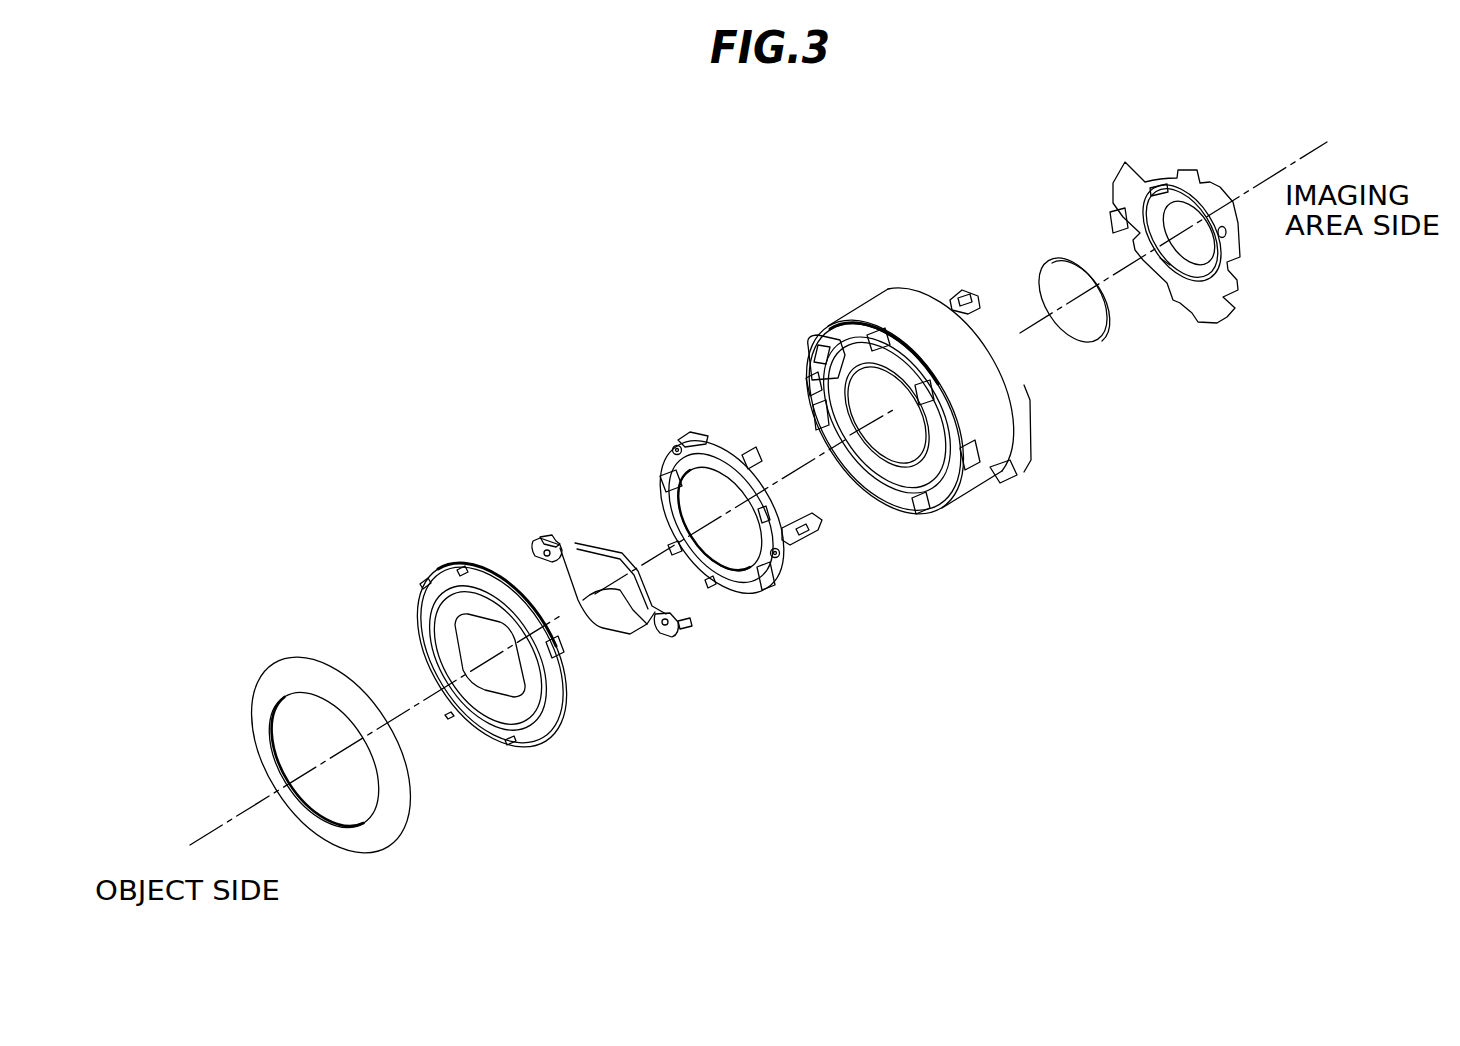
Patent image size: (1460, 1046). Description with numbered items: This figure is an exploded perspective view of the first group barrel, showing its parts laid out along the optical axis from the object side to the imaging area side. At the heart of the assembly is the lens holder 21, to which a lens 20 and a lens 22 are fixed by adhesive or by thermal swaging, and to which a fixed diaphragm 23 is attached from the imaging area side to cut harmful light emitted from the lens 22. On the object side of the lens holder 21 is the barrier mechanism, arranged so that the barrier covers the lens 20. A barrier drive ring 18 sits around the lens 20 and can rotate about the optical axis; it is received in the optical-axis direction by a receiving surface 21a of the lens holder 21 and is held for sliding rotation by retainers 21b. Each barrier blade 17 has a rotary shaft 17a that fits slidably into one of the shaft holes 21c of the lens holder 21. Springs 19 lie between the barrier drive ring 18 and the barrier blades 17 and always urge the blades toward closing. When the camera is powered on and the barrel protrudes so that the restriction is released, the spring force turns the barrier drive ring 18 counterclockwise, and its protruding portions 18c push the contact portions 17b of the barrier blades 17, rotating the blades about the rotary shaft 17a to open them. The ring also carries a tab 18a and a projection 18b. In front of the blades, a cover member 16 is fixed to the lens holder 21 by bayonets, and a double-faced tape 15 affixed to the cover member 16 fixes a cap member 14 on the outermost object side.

The cap member 14 is at (340, 835).
The double-faced tape 15 is at (473, 723).
The cover member 16 is at (510, 717).
The barrier blades 17 is at (598, 591).
The rotary shaft 17a is at (556, 540).
The contact portions 17b is at (533, 548).
The barrier drive ring 18 is at (721, 518).
The tab 18a is at (812, 536).
The projection 18b is at (690, 437).
The protruding portions 18c is at (665, 478).
The springs 19 is at (674, 447).
The lens 20 is at (902, 460).
The lens holder 21 is at (875, 409).
The receiving surface 21a is at (887, 332).
The retainers 21b is at (815, 345).
The shaft holes 21c is at (808, 381).
The lens 22 is at (1080, 333).
The fixed diaphragm 23 is at (1180, 297).